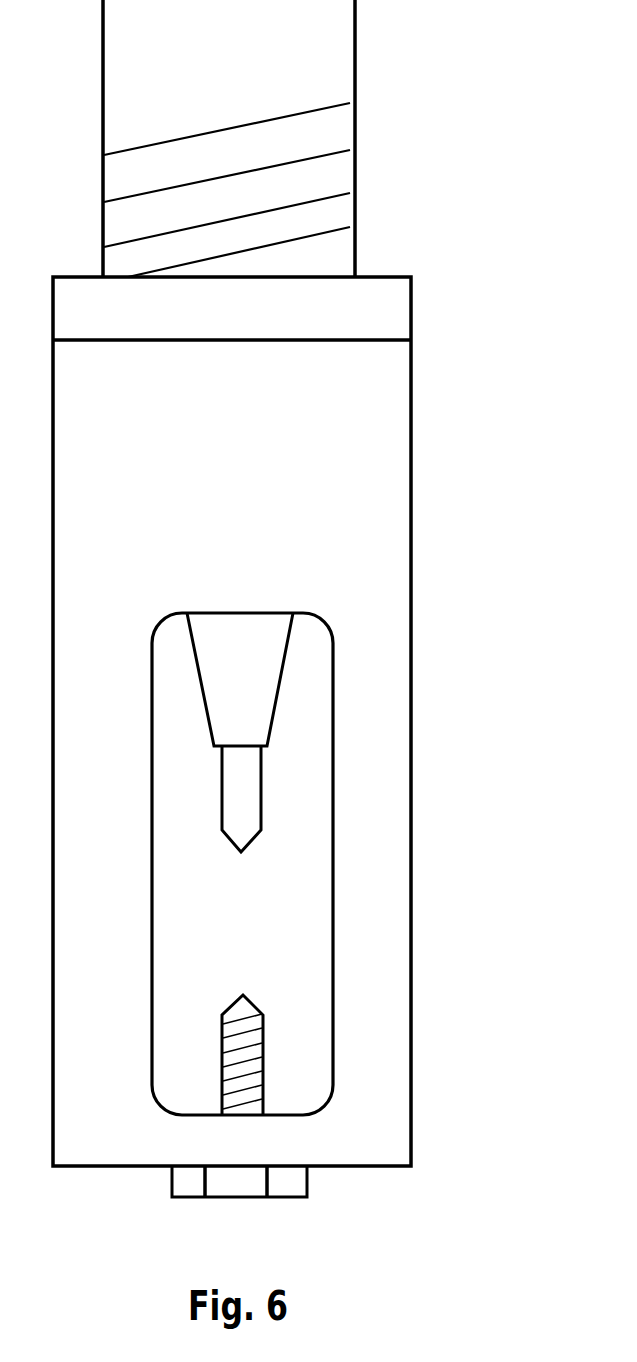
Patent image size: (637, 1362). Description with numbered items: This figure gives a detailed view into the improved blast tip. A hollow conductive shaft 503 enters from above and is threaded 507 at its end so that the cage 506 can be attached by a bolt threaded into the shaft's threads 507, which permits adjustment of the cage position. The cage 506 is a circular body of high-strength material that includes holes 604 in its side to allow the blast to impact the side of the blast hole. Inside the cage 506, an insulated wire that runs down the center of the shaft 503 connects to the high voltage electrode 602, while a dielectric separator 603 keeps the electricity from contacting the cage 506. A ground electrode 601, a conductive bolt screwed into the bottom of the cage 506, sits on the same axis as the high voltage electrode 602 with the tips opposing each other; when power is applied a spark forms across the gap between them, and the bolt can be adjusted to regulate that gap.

The shaft 503 is at (222, 21).
The threads 507 is at (333, 171).
The cage 506 is at (252, 421).
The holes 604 is at (251, 929).
The dielectric separator 603 is at (258, 658).
The high voltage electrode 602 is at (261, 800).
The ground electrode 601 is at (188, 1187).